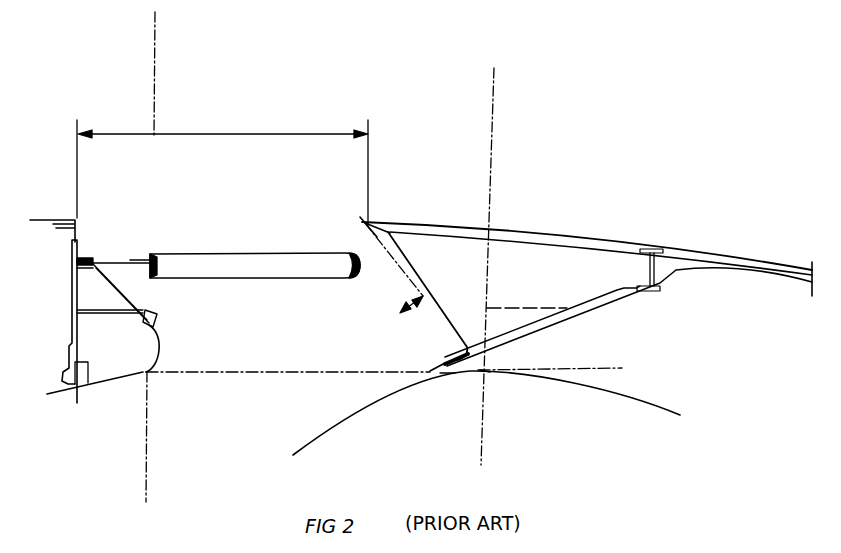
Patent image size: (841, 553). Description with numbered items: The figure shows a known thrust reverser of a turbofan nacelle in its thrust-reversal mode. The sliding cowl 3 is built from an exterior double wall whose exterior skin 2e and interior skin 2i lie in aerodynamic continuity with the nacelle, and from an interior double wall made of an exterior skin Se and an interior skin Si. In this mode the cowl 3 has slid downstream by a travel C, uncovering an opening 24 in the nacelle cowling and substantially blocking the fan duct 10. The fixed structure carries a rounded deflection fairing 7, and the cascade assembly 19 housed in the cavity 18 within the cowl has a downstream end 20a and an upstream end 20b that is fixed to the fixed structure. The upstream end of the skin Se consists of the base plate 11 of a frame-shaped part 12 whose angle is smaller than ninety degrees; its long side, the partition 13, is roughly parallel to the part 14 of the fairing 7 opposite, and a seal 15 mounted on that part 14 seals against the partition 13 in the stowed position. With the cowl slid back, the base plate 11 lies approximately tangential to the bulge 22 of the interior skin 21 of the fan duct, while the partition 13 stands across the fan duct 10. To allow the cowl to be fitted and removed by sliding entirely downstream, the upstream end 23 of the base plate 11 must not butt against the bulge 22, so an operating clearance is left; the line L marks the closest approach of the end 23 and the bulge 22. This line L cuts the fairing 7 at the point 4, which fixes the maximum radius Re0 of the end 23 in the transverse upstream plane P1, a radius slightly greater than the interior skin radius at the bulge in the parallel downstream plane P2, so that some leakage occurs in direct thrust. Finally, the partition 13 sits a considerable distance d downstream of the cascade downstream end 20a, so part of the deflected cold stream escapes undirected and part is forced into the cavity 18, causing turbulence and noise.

The exterior skin 2e is at (413, 225).
The interior skin of exterior double wall 2i is at (420, 238).
The sliding cowl 3 is at (583, 222).
The point 4 is at (148, 373).
The rounded deflection fairing 7 is at (150, 352).
The fan duct 10 is at (263, 411).
The base plate 11 is at (447, 375).
The frame-shaped part 12 is at (436, 328).
The partition 13 is at (463, 345).
The part of deflection fairing 14 is at (130, 300).
The seal 15 is at (155, 318).
The cavity 18 is at (527, 291).
The cascade assembly 19 is at (240, 252).
The downstream end 20a is at (350, 262).
The upstream end 20b is at (148, 257).
The interior skin 21 is at (372, 410).
The bulge 22 is at (486, 373).
The upstream end of base plate 23 is at (428, 370).
The opening 24 is at (212, 162).
The travel C is at (312, 134).
The distance d is at (400, 296).
The line L is at (558, 370).
The upstream plane P1 is at (166, 257).
The downstream plane P2 is at (502, 266).
The maximum radius Re0 is at (288, 354).
The exterior skin of interior double wall Se is at (595, 300).
The interior skin of interior double wall Si is at (563, 330).